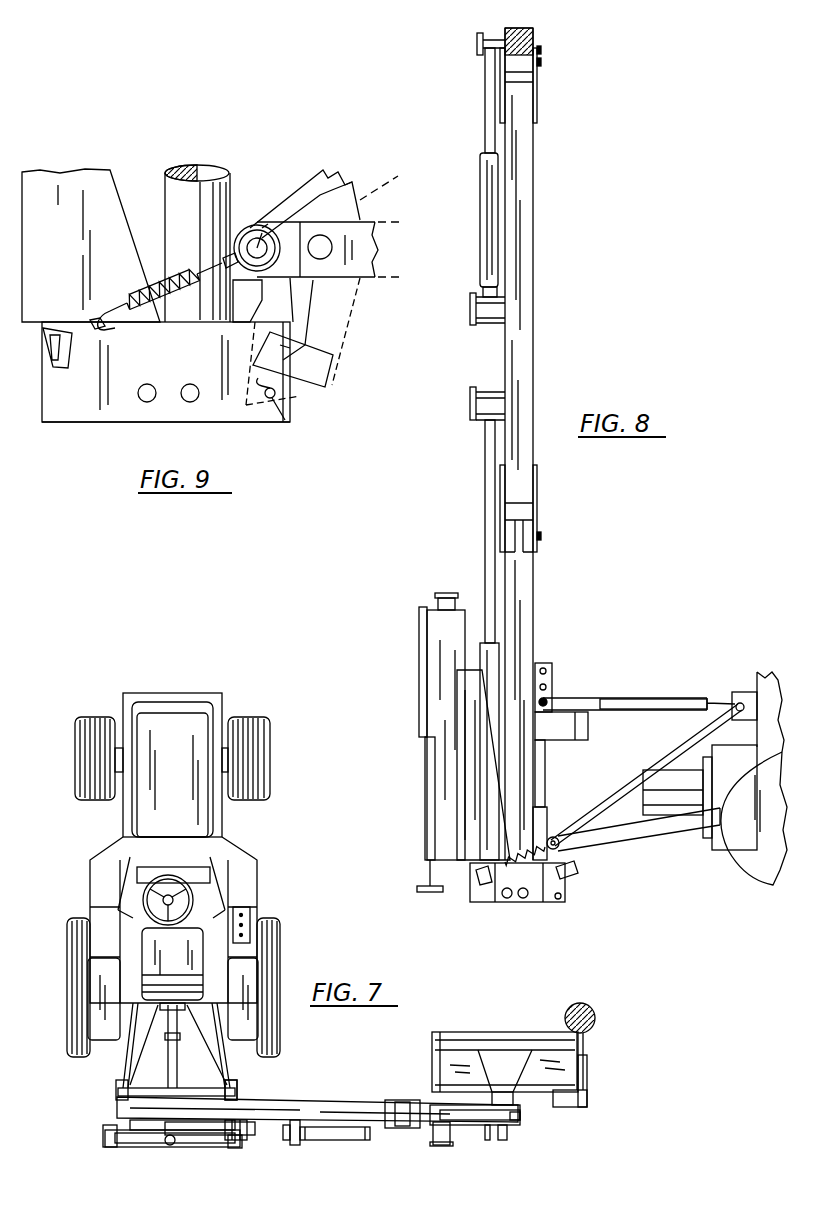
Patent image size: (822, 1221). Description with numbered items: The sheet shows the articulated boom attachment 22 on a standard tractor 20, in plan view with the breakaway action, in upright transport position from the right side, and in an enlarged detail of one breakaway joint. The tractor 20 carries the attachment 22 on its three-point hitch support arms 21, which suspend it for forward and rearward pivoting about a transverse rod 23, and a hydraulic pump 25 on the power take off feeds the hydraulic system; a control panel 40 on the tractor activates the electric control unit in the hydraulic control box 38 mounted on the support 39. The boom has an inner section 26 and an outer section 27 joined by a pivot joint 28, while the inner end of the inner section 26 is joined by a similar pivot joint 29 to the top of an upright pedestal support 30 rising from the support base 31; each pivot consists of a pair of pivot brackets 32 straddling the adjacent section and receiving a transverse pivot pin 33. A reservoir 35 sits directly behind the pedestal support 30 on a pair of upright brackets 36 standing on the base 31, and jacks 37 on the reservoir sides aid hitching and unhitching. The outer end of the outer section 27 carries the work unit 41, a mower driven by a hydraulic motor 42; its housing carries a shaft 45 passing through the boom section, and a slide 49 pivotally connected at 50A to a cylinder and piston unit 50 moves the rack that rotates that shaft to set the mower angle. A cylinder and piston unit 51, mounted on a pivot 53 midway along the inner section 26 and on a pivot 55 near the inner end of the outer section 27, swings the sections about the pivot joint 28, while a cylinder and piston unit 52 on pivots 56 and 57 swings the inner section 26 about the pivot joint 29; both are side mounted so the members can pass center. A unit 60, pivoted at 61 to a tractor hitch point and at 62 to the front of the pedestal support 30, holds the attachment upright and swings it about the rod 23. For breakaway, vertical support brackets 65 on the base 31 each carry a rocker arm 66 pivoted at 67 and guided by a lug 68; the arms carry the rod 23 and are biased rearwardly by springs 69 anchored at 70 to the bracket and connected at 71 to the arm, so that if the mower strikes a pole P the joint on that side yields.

In FIG. 8, the tractor 20 is at (766, 878).
In FIG. 7, the tractor 20 is at (265, 857).
In FIG. 9, the support arms 21 is at (374, 215).
In FIG. 8, the support arms 21 is at (645, 857).
In FIG. 7, the support arms 21 is at (111, 1071).
In FIG. 8, the attachment 22 is at (544, 612).
In FIG. 9, the rod 23 is at (246, 228).
In FIG. 8, the rod 23 is at (552, 836).
In FIG. 7, the rod 23 is at (206, 1088).
In FIG. 8, the hydraulic pump 25 is at (678, 782).
In FIG. 7, the hydraulic pump 25 is at (165, 1040).
In FIG. 8, the inner section 26 is at (534, 352).
In FIG. 7, the inner section 26 is at (330, 1105).
In FIG. 8, the outer section 27 is at (536, 36).
In FIG. 7, the outer section 27 is at (510, 1136).
In FIG. 8, the pivot joint 28 is at (541, 52).
In FIG. 8, the pivot joint 29 is at (541, 537).
In FIG. 9, the pedestal support 30 is at (183, 173).
In FIG. 8, the pedestal support 30 is at (534, 637).
In FIG. 9, the support base 31 is at (116, 425).
In FIG. 8, the support base 31 is at (504, 916).
In FIG. 7, the support base 31 is at (125, 1150).
In FIG. 8, the pivot brackets 32 is at (502, 100).
In FIG. 8, the pivot pin 33 is at (541, 66).
In FIG. 8, the reservoir 35 is at (436, 640).
In FIG. 7, the reservoir 35 is at (188, 1150).
In FIG. 9, the upright brackets 36 is at (58, 195).
In FIG. 8, the upright brackets 36 is at (470, 780).
In FIG. 8, the jacks 37 is at (430, 875).
In FIG. 7, the jacks 37 is at (102, 1150).
In FIG. 8, the hydraulic control box 38 is at (568, 705).
In FIG. 8, the support 39 is at (589, 728).
In FIG. 7, the control panel 40 is at (250, 915).
In FIG. 7, the work unit 41 is at (565, 1072).
In FIG. 7, the hydraulic motor 42 is at (588, 1098).
In FIG. 7, the shaft 45 is at (525, 1140).
In FIG. 7, the slide 49 is at (521, 1125).
In FIG. 7, the cylinder and piston unit 50 is at (487, 1142).
In FIG. 7, the pivotal connection 50A is at (502, 1142).
In FIG. 8, the cylinder and piston unit 51 is at (488, 228).
In FIG. 7, the cylinder and piston unit 51 is at (345, 1141).
In FIG. 8, the cylinder and piston unit 52 is at (484, 655).
In FIG. 7, the cylinder and piston unit 52 is at (222, 1150).
In FIG. 8, the pivot 53 is at (471, 310).
In FIG. 7, the pivot 53 is at (292, 1148).
In FIG. 8, the pivot 55 is at (477, 43).
In FIG. 7, the pivot 55 is at (440, 1147).
In FIG. 8, the pivot 56 is at (470, 411).
In FIG. 7, the pivot 56 is at (240, 1143).
In FIG. 7, the pivot 57 is at (163, 1148).
In FIG. 8, the unit 60 is at (657, 699).
In FIG. 8, the pivot 61 is at (735, 692).
In FIG. 8, the pivot 62 is at (551, 678).
In FIG. 9, the vertical support brackets 65 is at (86, 410).
In FIG. 7, the vertical support brackets 65 is at (117, 1092).
In FIG. 9, the rocker arm 66 is at (306, 305).
In FIG. 9, the pivot 67 is at (272, 400).
In FIG. 9, the lug 68 is at (333, 375).
In FIG. 9, the spring 69 is at (157, 292).
In FIG. 8, the spring 69 is at (525, 856).
In FIG. 9, the spring anchor 70 is at (60, 368).
In FIG. 9, the spring connection 71 is at (233, 300).
In FIG. 7, the pole P is at (596, 1010).